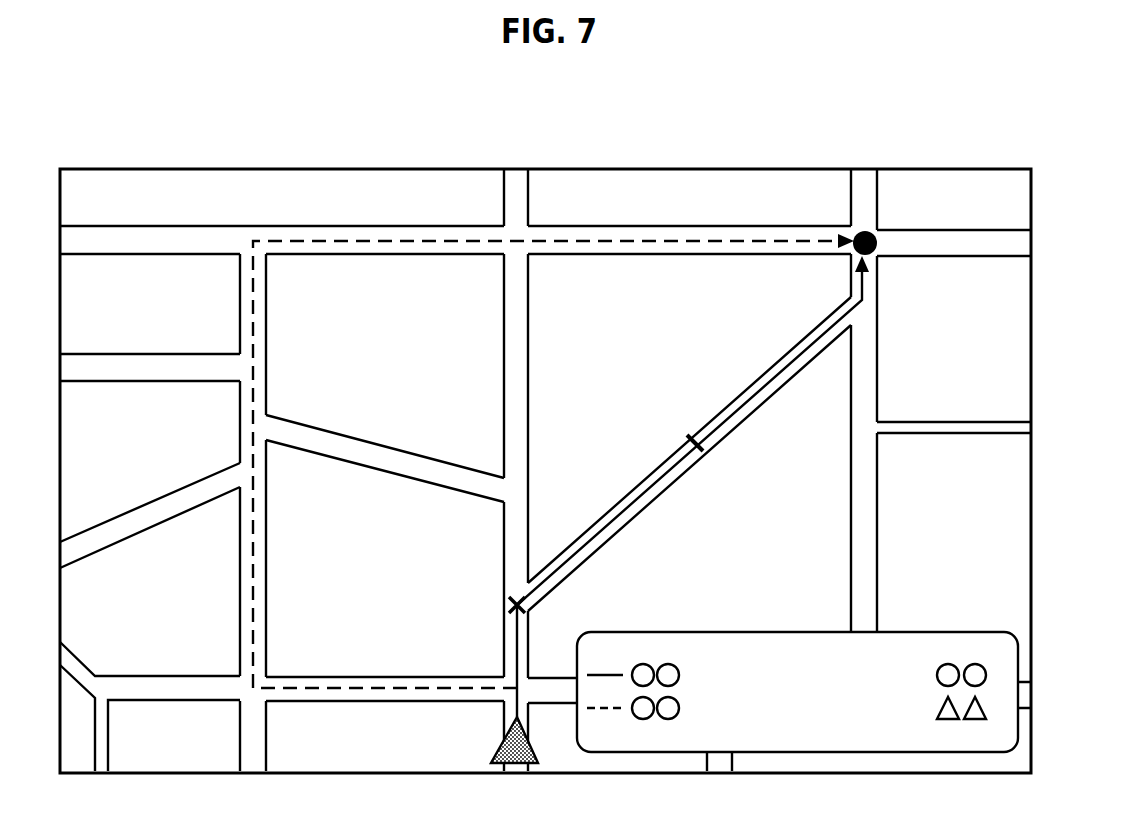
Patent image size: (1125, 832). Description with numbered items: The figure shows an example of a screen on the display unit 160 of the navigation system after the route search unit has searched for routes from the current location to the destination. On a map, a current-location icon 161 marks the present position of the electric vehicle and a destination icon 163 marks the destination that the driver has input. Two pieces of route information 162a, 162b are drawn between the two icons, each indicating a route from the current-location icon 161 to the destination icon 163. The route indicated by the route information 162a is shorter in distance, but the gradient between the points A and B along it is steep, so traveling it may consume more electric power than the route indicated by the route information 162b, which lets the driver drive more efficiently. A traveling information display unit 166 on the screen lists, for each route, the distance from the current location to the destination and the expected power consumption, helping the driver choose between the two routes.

The display unit 160 is at (480, 168).
The current-location icon 161 is at (490, 742).
The route information 162a is at (618, 509).
The route information 162b is at (253, 314).
The destination icon 163 is at (865, 231).
The traveling information display unit 166 is at (1018, 661).
The point A is at (507, 605).
The point B is at (697, 436).